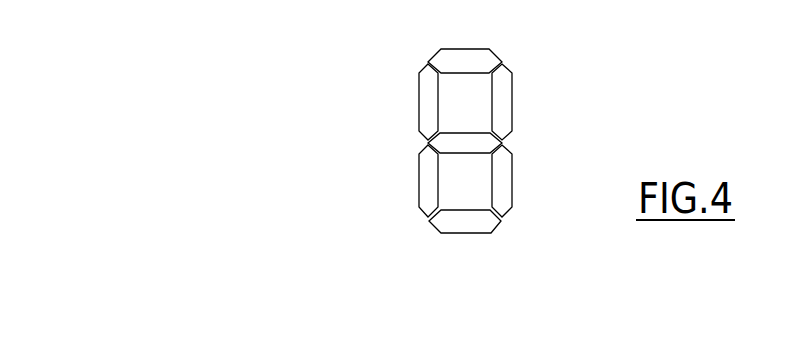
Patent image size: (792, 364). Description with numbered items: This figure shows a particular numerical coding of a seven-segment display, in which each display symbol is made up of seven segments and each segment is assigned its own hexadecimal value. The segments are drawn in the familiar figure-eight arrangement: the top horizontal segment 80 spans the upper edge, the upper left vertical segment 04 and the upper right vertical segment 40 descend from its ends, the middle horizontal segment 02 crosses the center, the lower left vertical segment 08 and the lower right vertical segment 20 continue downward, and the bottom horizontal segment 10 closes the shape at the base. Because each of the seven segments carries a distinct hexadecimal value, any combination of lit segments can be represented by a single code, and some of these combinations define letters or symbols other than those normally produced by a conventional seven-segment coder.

The top horizontal segment 80 is at (467, 55).
The upper left vertical segment 04 is at (427, 104).
The upper right vertical segment 40 is at (500, 100).
The middle horizontal segment 02 is at (457, 142).
The lower left vertical segment 08 is at (432, 190).
The lower right vertical segment 20 is at (503, 185).
The bottom horizontal segment 10 is at (468, 223).